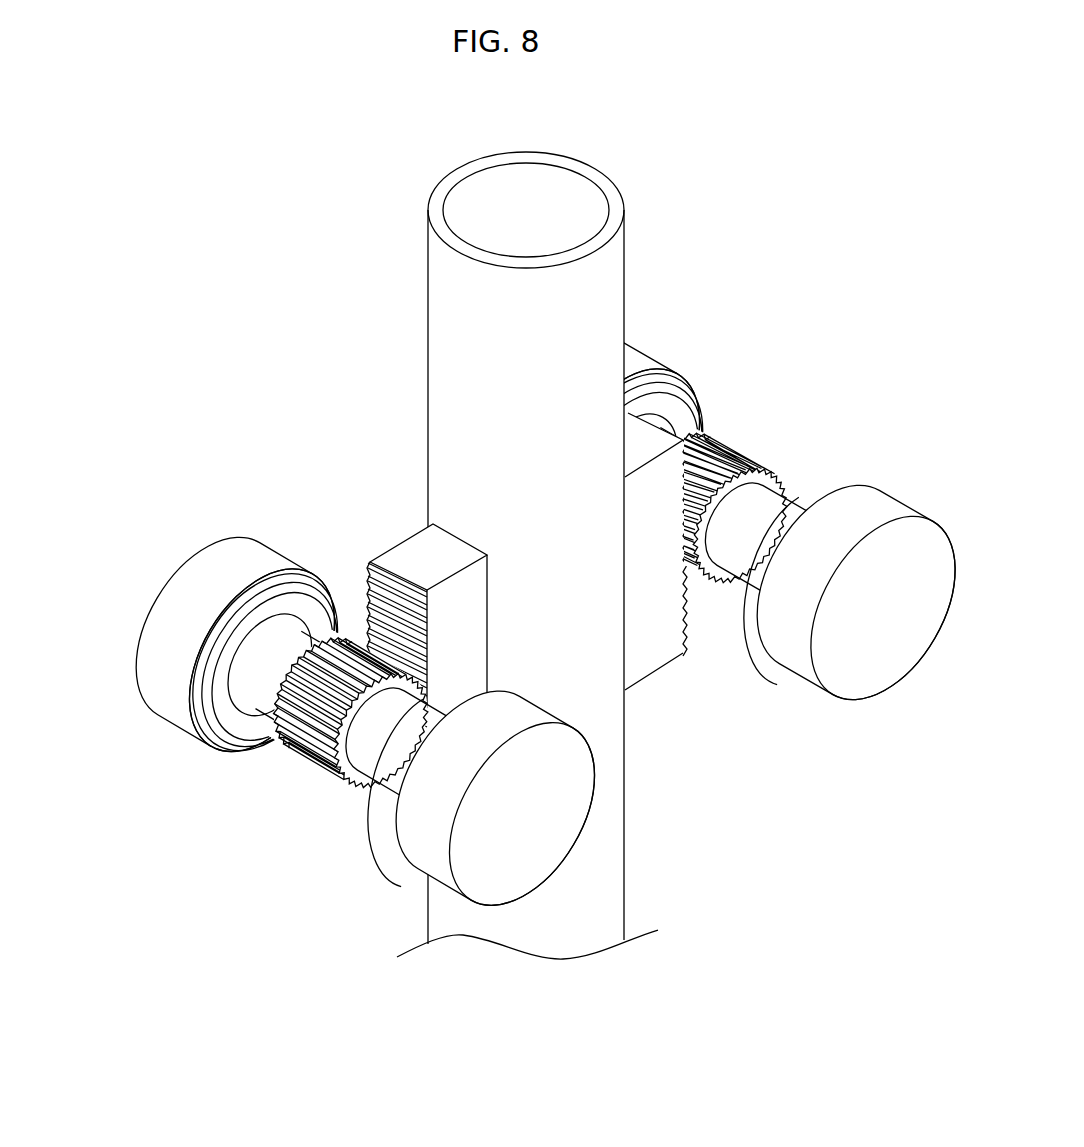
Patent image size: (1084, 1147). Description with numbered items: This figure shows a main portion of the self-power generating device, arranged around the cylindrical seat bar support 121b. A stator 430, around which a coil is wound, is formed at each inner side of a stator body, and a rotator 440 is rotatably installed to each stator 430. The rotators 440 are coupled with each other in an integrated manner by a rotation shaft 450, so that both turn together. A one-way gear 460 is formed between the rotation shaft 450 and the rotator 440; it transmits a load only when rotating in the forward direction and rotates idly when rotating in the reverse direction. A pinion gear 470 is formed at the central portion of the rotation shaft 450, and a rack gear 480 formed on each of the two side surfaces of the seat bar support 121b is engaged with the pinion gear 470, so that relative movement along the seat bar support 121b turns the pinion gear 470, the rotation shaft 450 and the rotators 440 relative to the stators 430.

The seat bar support 121b is at (457, 330).
The stator 430 is at (662, 373).
The rotator 440 is at (658, 410).
The rotation shaft 450 is at (760, 503).
The one-way gear 460 is at (290, 622).
The pinion gear 470 is at (740, 447).
The rack gear 480 is at (653, 640).